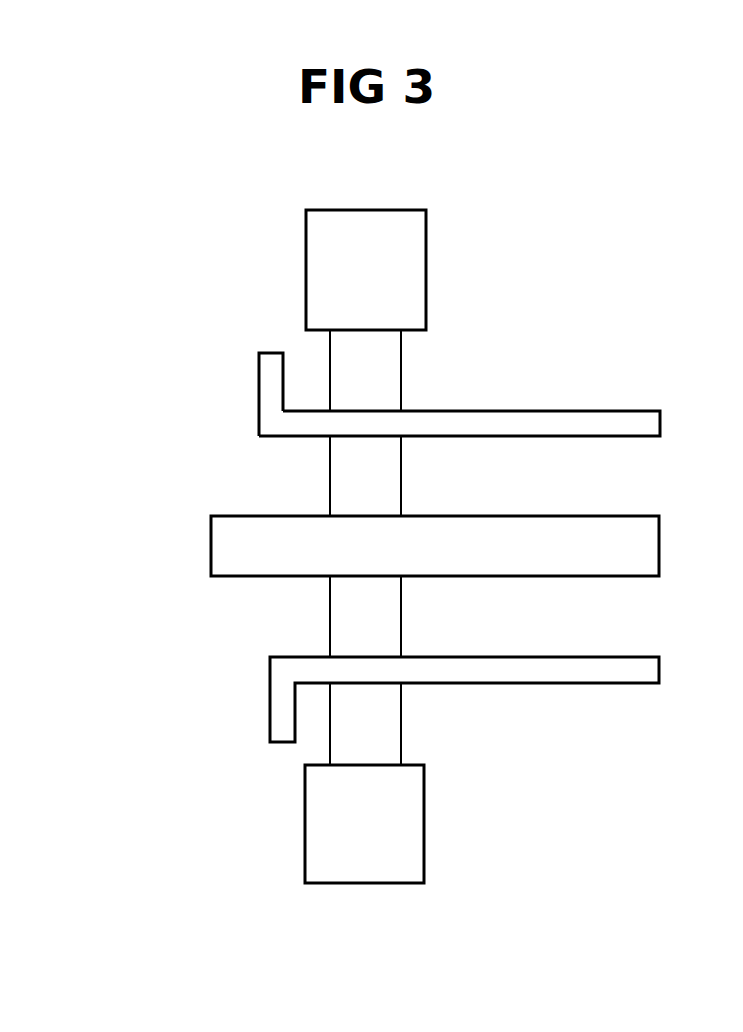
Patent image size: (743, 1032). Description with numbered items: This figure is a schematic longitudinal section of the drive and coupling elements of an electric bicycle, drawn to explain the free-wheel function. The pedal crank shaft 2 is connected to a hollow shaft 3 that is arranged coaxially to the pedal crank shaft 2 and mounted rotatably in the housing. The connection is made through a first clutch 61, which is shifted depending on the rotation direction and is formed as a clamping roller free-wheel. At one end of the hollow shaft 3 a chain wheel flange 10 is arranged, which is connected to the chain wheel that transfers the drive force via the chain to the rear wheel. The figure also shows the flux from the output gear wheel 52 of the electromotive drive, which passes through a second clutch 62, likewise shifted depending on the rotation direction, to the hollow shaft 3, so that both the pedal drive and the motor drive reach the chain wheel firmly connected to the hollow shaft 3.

The output gear wheel 52 is at (377, 222).
The first clutch 61 is at (365, 493).
The chain wheel flange 10 is at (272, 377).
The hollow shaft 3 is at (612, 425).
The pedal crank shaft 2 is at (223, 552).
The second clutch 62 is at (388, 729).